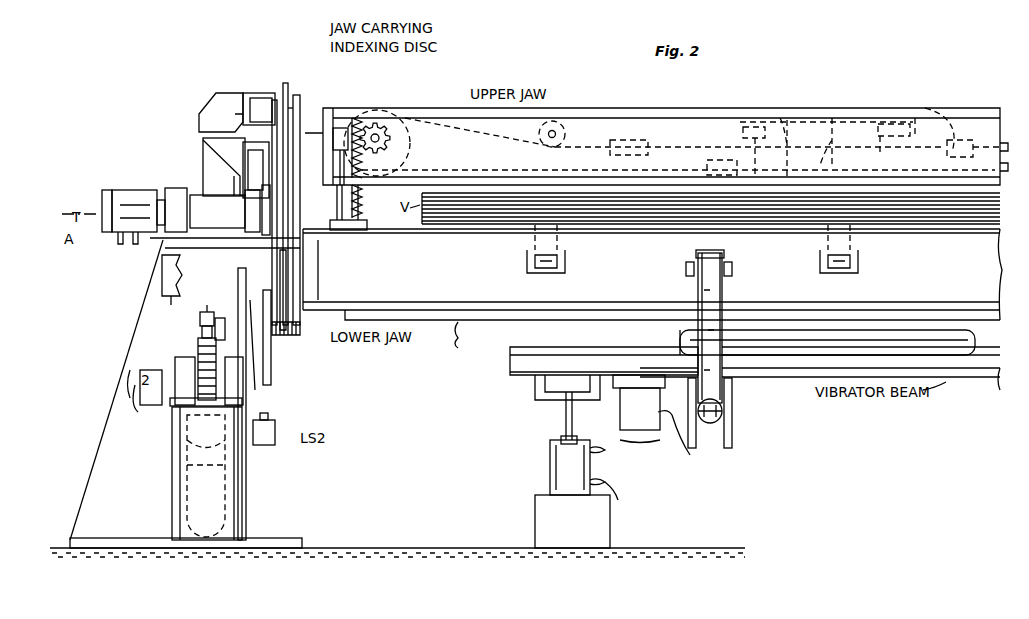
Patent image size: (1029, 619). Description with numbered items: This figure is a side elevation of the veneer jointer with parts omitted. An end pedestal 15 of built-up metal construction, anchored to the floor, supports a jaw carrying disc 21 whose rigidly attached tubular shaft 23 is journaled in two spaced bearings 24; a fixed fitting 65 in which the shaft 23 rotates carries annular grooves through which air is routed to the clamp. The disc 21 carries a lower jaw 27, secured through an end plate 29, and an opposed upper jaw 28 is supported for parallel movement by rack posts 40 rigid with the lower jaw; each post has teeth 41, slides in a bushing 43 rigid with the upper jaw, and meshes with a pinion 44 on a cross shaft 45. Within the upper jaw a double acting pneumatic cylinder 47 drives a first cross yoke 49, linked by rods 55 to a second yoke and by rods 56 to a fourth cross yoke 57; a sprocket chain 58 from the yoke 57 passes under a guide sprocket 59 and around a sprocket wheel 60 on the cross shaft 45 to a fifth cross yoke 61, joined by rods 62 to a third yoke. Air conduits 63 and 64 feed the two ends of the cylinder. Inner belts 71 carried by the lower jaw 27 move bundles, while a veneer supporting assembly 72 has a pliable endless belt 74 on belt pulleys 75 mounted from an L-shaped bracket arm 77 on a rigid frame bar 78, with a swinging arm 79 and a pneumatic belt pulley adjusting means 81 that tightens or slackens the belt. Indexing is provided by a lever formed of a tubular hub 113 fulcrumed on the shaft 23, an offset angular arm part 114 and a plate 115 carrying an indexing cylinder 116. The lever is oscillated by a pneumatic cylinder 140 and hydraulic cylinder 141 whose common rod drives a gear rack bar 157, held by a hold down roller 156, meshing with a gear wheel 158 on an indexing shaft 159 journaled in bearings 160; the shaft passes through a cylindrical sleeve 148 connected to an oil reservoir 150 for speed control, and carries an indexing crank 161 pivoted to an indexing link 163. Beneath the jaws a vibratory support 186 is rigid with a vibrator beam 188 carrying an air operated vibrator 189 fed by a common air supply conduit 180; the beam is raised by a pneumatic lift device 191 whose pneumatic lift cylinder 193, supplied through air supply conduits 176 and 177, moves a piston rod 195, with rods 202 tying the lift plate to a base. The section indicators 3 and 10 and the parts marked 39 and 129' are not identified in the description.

The section line 3- 3 is at (63, 560).
The section line 10- 10 is at (617, 565).
The end pedestal 15 is at (140, 305).
The jaw carrying disc 21 is at (290, 98).
The tubular shaft 23 is at (283, 208).
The bearings 24 is at (180, 222).
The lower jaw 27 is at (502, 330).
The upper jaw 28 is at (676, 100).
The end plate 29 is at (305, 290).
The slide block 39 is at (340, 128).
The rack post 40 is at (360, 222).
The teeth 41 is at (362, 200).
The bushing 43 is at (346, 118).
The pinion 44 is at (410, 150).
The cross shaft 45 is at (376, 123).
The double acting pneumatic cylinder 47 is at (842, 122).
The first cross yoke 49 is at (928, 110).
The rods 55 is at (973, 139).
The rods 56 is at (787, 120).
The fourth cross yoke 57 is at (635, 140).
The sprocket chain 58 is at (490, 138).
The guide sprocket 59 is at (565, 137).
The sprocket wheel 60 is at (408, 115).
The fifth cross yoke 61 is at (710, 160).
The rods 62 is at (834, 141).
The air conduit 63 is at (742, 127).
The air conduit 64 is at (880, 122).
The fixed fitting 65 is at (132, 182).
The inner belts 71 is at (527, 262).
The veneer supporting assembly 72 is at (738, 265).
The endless belt 74 is at (702, 290).
The belt pulley 75 is at (696, 258).
The L-shaped bracket arm 77 is at (700, 448).
The rigid frame bar 78 is at (792, 345).
The swinging arm 79 is at (732, 392).
The belt pulley adjusting means 81 is at (720, 418).
The tubular hub 113 is at (225, 216).
The offset angular arm part 114 is at (203, 170).
The plate 115 is at (283, 92).
The indexing cylinder 116 is at (258, 98).
The hopper block 129' is at (211, 96).
The pneumatic cylinder 140 is at (225, 510).
The hydraulic cylinder 141 is at (222, 435).
The cylindrical sleeve 148 is at (142, 405).
The oil reservoir 150 is at (162, 270).
The hold down roller 156 is at (207, 300).
The gear rack bar 157 is at (202, 345).
The gear wheel 158 is at (198, 372).
The indexing shaft 159 is at (180, 372).
The bearings 160 is at (243, 375).
The indexing crank 161 is at (272, 350).
The indexing link 163 is at (238, 292).
The air supply conduit 176 is at (592, 450).
The air supply conduit 177 is at (618, 493).
The air supply conduit 180 is at (674, 443).
The vibratory support 186 is at (640, 345).
The vibrator beam 188 is at (975, 380).
The air operated vibrator 189 is at (639, 420).
The pneumatic lift device 191 is at (540, 448).
The pneumatic lift cylinder 193 is at (550, 488).
The piston rod 195 is at (560, 412).
The rods 202 is at (561, 438).